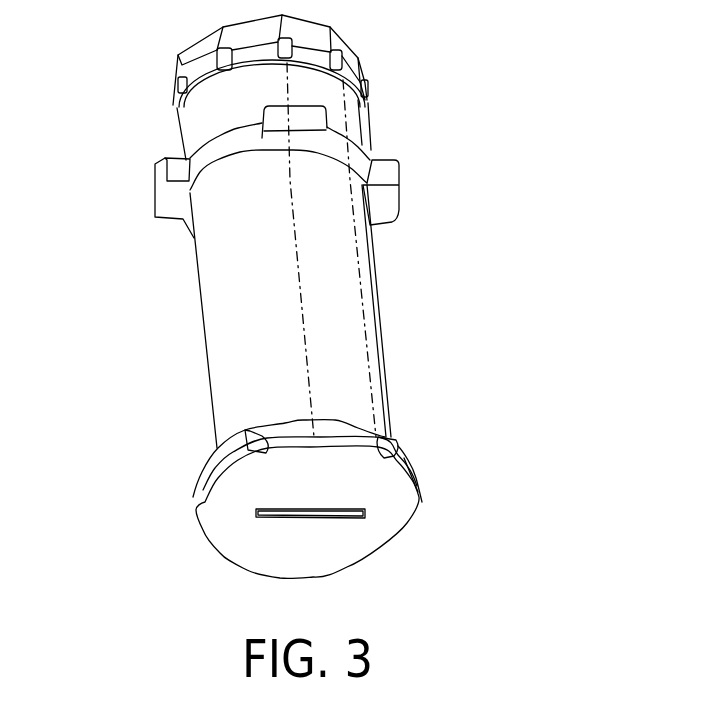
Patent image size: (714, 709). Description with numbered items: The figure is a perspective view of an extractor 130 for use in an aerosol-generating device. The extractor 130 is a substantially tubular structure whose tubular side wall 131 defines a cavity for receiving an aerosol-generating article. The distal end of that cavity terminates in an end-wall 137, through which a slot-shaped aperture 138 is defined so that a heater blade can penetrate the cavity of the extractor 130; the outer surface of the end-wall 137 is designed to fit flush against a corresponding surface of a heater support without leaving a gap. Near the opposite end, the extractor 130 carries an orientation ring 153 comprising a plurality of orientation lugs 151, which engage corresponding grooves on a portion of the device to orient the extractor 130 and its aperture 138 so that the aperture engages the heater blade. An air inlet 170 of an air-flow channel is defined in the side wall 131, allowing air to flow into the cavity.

The extractor 130 is at (451, 142).
The tubular side wall 131 is at (365, 297).
The end-wall 137 is at (400, 512).
The slot-shaped aperture 138 is at (323, 517).
The orientation lugs 151 is at (155, 190).
The orientation ring 153 is at (198, 157).
The air inlet 170 is at (385, 435).